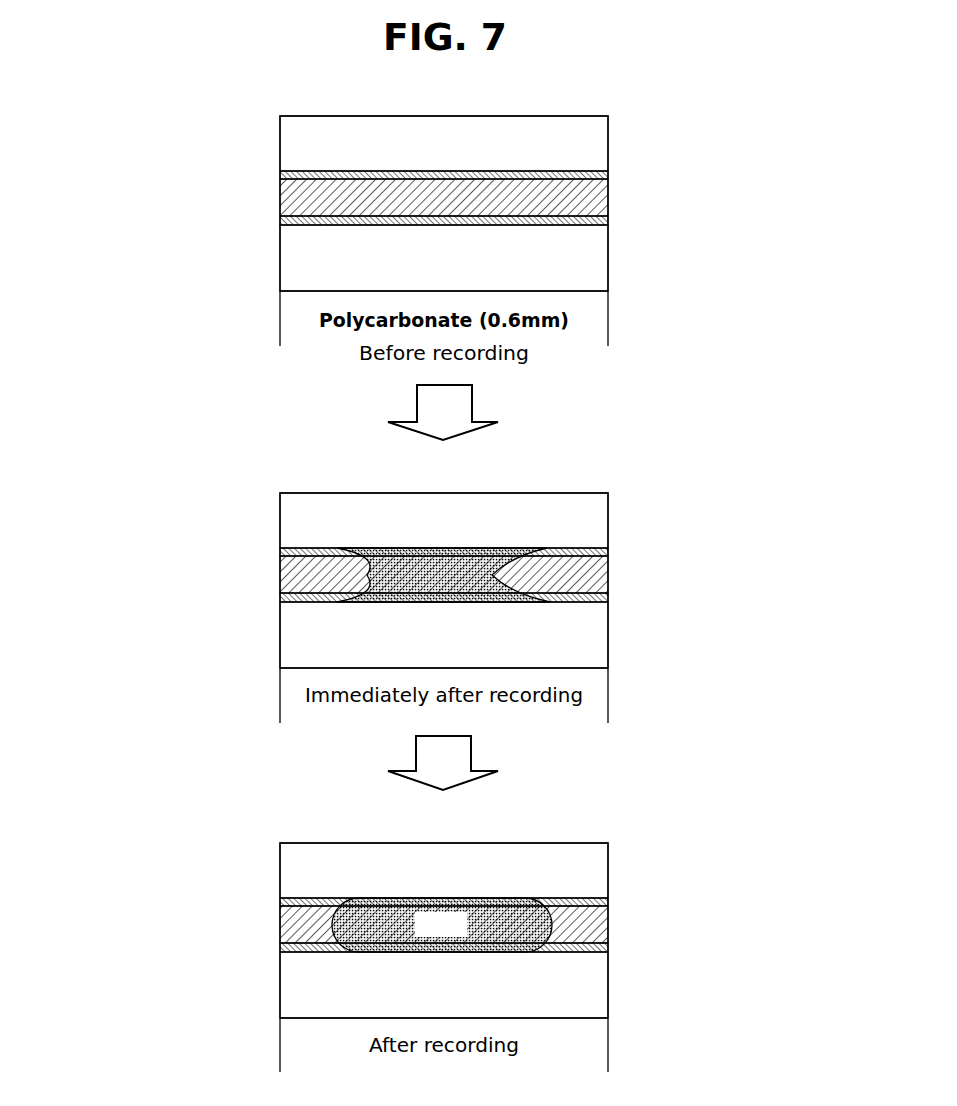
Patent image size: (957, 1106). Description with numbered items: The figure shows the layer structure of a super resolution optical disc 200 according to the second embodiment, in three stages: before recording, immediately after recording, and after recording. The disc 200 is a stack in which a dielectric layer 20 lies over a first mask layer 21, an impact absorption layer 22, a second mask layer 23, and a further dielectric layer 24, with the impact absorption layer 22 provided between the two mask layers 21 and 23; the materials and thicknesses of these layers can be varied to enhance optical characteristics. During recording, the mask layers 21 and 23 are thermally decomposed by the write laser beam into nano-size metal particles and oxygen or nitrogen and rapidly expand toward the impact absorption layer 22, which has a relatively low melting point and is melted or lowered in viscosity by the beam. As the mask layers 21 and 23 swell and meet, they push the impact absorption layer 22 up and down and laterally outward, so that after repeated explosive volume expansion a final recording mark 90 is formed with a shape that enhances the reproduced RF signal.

The super resolution optical disc 200 is at (333, 100).
The dielectric layer 20 is at (307, 144).
The mask layer 21 is at (580, 171).
The impact absorption layer 22 is at (608, 198).
The mask layer 23 is at (580, 225).
The dielectric layer 24 is at (307, 258).
The recording mark 90 is at (442, 925).